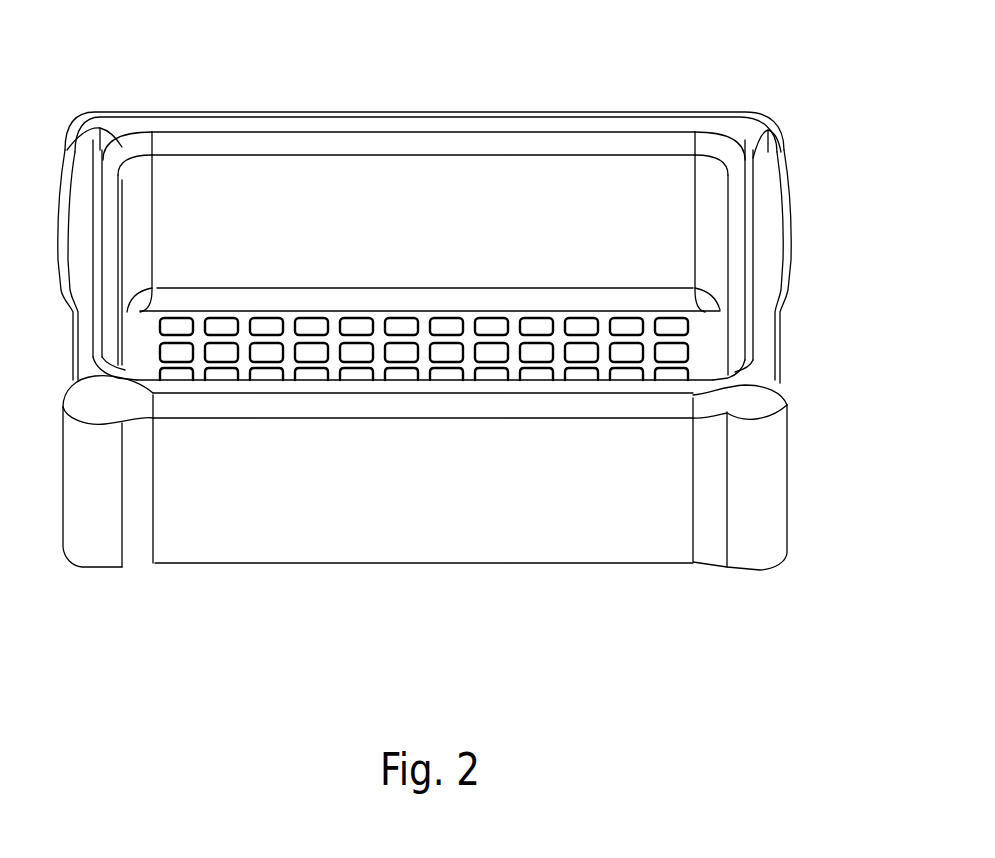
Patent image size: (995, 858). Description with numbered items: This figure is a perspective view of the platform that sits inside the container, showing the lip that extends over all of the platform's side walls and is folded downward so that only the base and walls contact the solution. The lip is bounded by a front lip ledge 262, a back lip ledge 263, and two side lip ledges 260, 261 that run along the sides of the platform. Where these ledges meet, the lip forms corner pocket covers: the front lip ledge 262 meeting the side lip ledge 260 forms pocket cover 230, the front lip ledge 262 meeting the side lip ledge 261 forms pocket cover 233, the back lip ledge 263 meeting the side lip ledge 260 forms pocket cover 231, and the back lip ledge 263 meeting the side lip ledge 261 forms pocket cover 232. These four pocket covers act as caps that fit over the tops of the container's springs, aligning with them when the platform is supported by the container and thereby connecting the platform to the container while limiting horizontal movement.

The pocket cover 230 is at (425, 473).
The pocket cover 231 is at (98, 132).
The pocket cover 232 is at (750, 132).
The pocket cover 233 is at (737, 393).
The side lip ledge 260 is at (111, 256).
The side lip ledge 261 is at (737, 256).
The front lip ledge 262 is at (430, 353).
The back lip ledge 263 is at (424, 146).